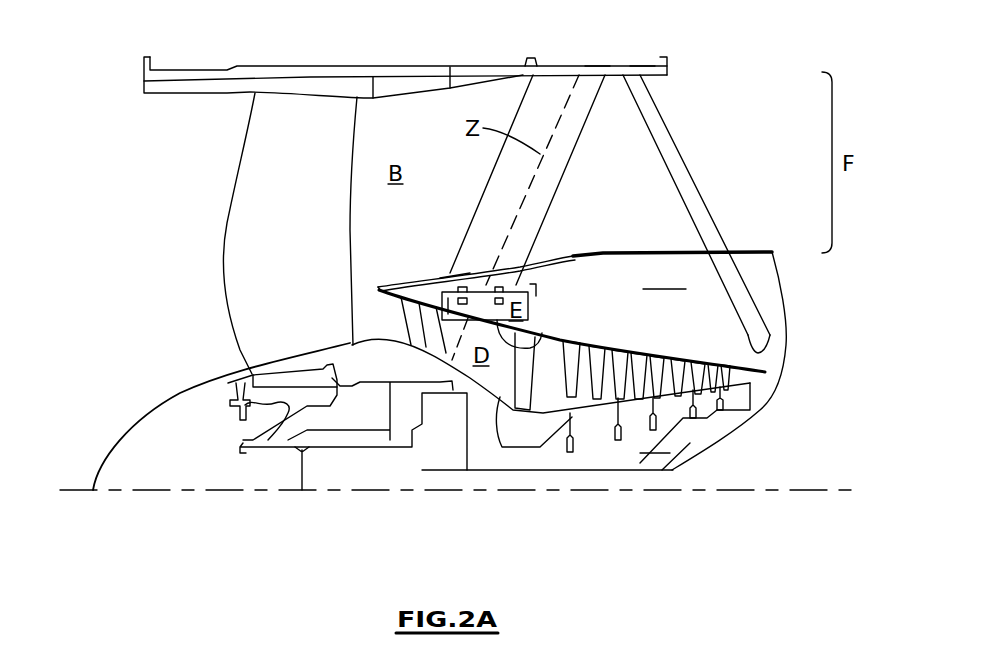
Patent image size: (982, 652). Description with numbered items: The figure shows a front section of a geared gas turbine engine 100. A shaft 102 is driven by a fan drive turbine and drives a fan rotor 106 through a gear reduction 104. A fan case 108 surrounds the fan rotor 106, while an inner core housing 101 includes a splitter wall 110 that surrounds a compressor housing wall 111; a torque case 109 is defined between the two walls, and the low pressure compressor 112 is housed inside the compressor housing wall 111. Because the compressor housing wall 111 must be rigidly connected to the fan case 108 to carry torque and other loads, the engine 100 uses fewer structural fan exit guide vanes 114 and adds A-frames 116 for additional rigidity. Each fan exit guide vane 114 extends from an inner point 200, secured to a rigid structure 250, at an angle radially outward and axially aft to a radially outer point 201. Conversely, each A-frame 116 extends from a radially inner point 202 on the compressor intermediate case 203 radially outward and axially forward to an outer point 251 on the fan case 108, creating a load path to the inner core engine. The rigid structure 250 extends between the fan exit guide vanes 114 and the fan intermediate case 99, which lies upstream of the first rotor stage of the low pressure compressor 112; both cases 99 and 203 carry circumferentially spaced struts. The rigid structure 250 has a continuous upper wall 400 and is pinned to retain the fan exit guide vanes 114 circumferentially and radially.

The engine 100 is at (158, 291).
The fan intermediate case 99 is at (443, 338).
The inner core housing 101 is at (814, 353).
The shaft 102 is at (560, 470).
The gear reduction 104 is at (441, 423).
The fan rotor 106 is at (260, 225).
The fan case 108 is at (398, 82).
The torque case 109 is at (664, 278).
The splitter wall 110 is at (617, 250).
The compressor housing wall 111 is at (563, 338).
The low pressure compressor 112 is at (635, 377).
The structural fan exit guide vanes 114 is at (545, 103).
The A-frames 116 is at (675, 162).
The inner point 200 is at (521, 293).
The radially outer point 201 is at (597, 72).
The radially inner point 202 is at (771, 330).
The compressor intermediate case 203 is at (760, 385).
The rigid structure 250 is at (548, 333).
The outer point 251 is at (640, 73).
The continuous upper wall 400 is at (513, 285).